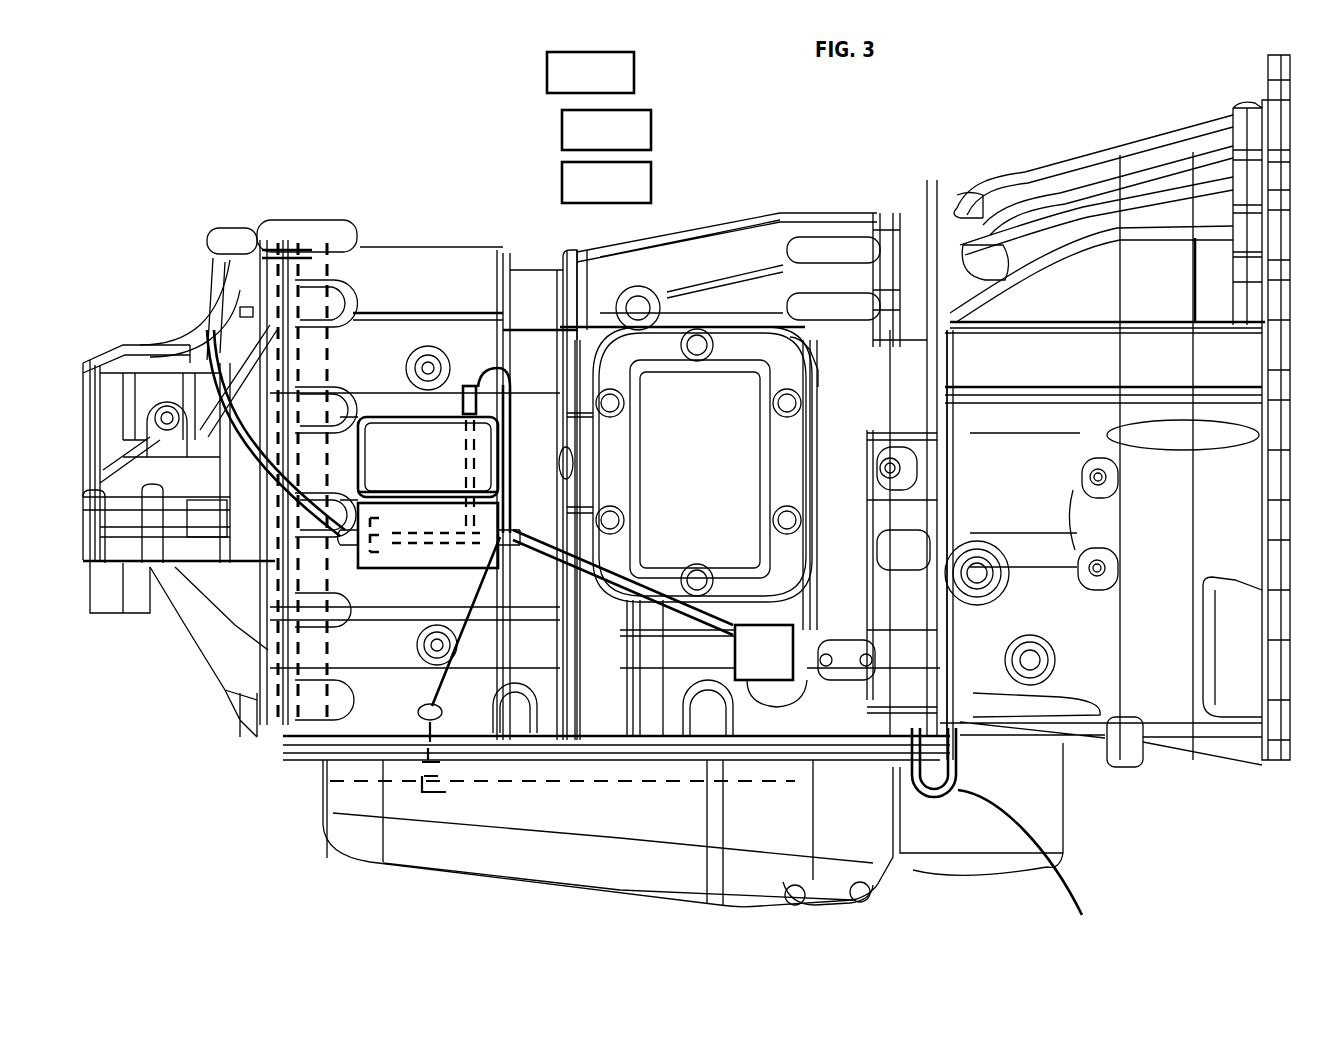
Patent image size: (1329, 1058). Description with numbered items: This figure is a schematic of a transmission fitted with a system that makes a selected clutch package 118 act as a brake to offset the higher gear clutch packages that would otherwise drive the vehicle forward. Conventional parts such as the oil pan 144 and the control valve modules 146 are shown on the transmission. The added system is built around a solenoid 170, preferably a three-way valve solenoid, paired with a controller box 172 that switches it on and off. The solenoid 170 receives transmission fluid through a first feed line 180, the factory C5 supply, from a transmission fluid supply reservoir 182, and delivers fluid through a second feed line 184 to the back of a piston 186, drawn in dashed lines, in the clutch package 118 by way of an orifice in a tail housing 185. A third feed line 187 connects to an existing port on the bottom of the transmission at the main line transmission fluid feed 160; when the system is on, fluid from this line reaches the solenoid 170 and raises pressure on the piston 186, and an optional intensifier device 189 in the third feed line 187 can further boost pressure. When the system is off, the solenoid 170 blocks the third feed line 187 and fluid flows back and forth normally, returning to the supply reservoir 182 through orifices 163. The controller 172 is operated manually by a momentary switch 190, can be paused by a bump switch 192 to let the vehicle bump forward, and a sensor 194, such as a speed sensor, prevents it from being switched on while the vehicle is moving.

The clutch package 118 is at (303, 310).
The oil pan 144 is at (648, 880).
The control valve modules 146 is at (433, 790).
The main line transmission fluid feed 160 is at (973, 723).
The orifices 163 is at (418, 711).
The solenoid 170 is at (415, 497).
The controller box 172 is at (398, 427).
The first feed line 180 is at (520, 398).
The transmission fluid supply reservoir 182 is at (372, 775).
The second feed line 184 is at (197, 367).
The tail housing 185 is at (240, 345).
The piston 186 is at (240, 303).
The third feed line 187 is at (497, 573).
The intensifier device 189 is at (778, 682).
The momentary switch 190 is at (437, 410).
The bump switch 192 is at (443, 410).
The sensor 194 is at (445, 410).